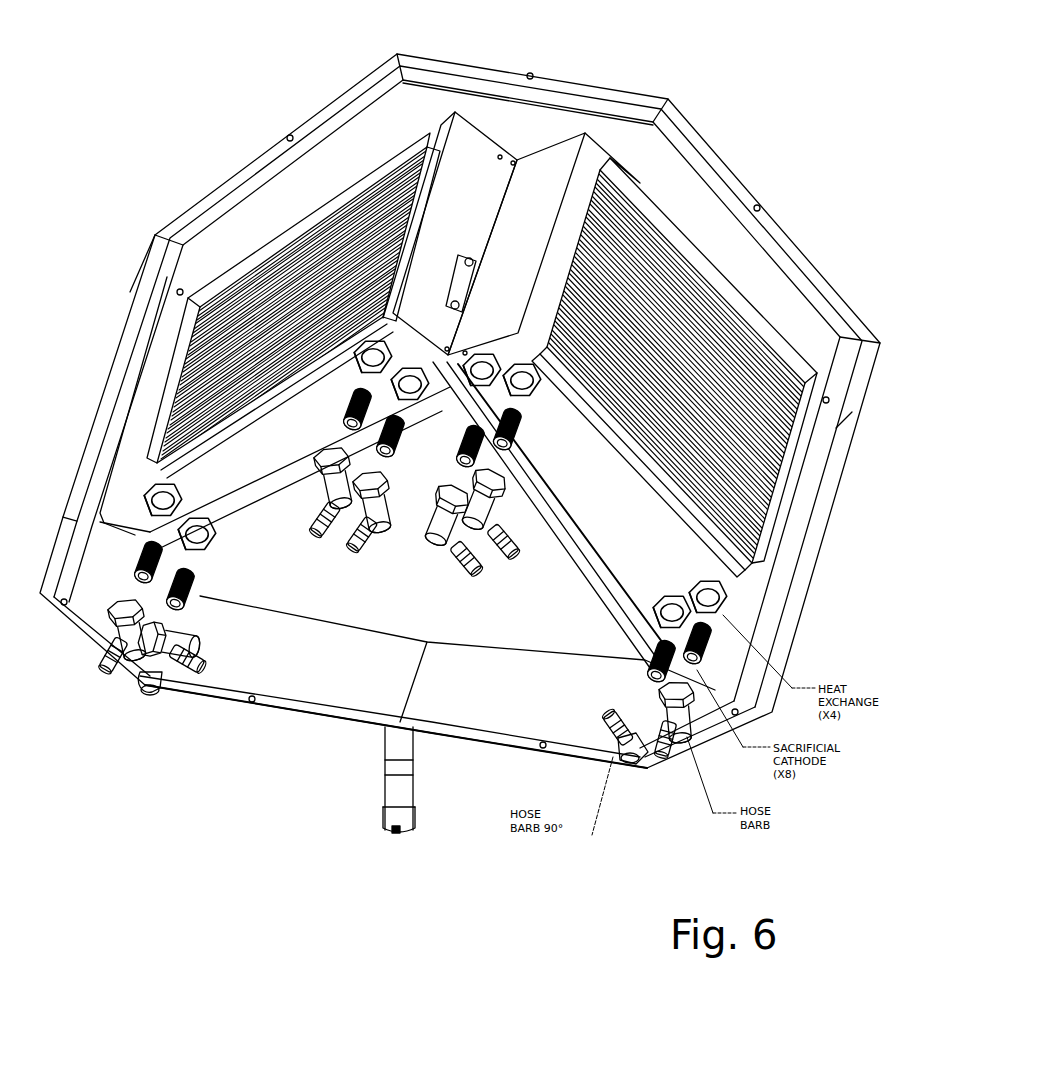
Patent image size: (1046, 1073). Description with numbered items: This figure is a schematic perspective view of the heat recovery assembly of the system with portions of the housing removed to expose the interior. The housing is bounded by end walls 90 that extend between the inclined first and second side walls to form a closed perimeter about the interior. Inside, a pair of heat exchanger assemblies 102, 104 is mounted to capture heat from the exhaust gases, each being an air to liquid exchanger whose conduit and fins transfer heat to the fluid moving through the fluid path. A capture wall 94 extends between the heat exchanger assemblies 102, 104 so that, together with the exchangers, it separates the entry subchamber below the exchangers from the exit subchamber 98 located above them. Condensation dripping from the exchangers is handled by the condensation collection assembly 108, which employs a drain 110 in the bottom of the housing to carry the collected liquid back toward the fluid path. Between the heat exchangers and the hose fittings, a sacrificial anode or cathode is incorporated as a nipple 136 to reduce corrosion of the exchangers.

The end walls 90 is at (663, 175).
The capture wall 94 is at (290, 582).
The exit subchamber 98 is at (453, 675).
The heat exchanger assembly 102 is at (303, 182).
The heat exchanger assembly 104 is at (766, 292).
The condensation collection assembly 108 is at (343, 685).
The drain 110 is at (390, 752).
The nipple 136 is at (690, 657).